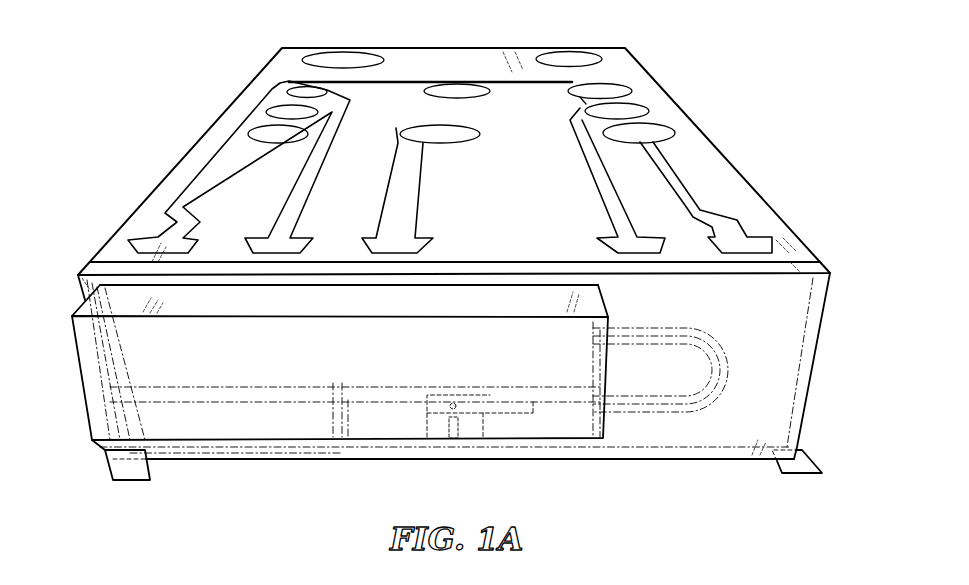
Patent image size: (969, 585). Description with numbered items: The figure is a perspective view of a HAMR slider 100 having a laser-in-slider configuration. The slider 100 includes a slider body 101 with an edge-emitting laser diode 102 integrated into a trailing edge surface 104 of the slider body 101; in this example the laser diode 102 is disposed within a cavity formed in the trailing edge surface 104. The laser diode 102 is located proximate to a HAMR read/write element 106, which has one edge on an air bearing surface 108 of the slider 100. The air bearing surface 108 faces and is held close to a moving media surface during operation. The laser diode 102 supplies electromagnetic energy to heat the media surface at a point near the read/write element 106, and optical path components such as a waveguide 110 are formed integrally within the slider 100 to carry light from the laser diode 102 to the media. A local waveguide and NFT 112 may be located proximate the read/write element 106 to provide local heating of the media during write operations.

The slider 100 is at (722, 84).
The slider body 101 is at (128, 218).
The edge-emitting laser diode 102 is at (108, 407).
The trailing edge surface 104 is at (136, 482).
The HAMR read/write element 106 is at (465, 442).
The air bearing surface 108 is at (812, 473).
The waveguide 110 is at (667, 410).
The local waveguide and NFT 112 is at (452, 448).